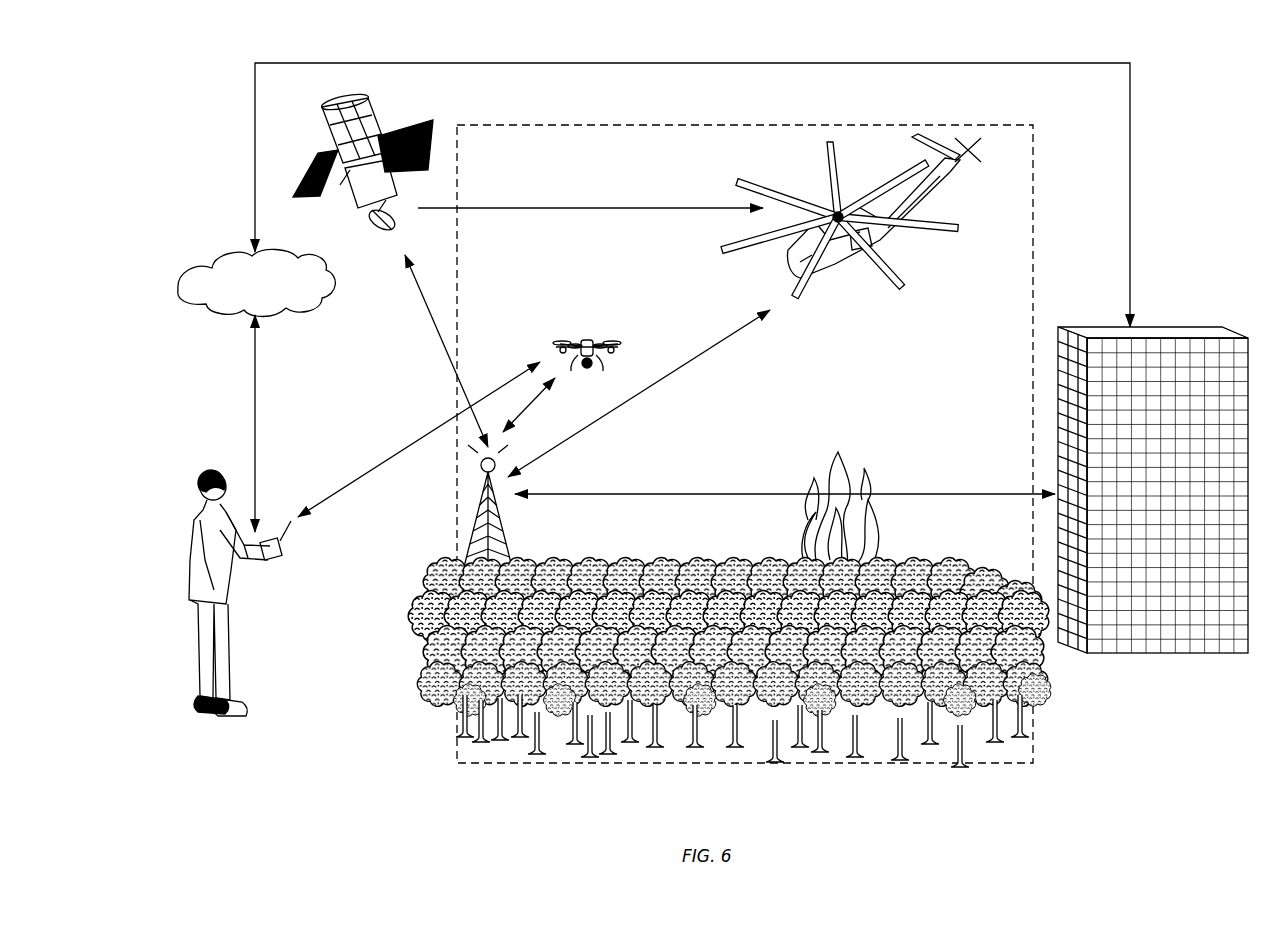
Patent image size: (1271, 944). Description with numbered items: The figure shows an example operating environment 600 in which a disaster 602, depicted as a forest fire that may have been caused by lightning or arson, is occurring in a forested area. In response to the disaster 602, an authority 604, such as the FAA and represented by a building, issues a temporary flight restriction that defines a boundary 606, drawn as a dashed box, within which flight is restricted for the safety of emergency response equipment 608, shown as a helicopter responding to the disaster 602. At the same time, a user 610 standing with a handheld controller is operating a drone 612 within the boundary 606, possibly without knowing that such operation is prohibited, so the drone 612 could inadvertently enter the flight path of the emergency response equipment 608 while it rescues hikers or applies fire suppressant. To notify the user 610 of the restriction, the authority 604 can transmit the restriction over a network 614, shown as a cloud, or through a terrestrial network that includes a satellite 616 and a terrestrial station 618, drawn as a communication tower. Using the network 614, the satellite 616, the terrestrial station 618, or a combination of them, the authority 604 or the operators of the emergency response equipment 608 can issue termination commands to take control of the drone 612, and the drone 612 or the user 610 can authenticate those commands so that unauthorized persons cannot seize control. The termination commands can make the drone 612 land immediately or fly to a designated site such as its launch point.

The operating environment 600 is at (1160, 75).
The disaster 602 is at (898, 445).
The authority 604 is at (1130, 653).
The boundary 606 is at (1035, 707).
The emergency response equipment 608 is at (823, 180).
The user 610 is at (247, 713).
The drone 612 is at (607, 338).
The network 614 is at (222, 255).
The satellite 616 is at (373, 118).
The terrestrial station 618 is at (480, 495).